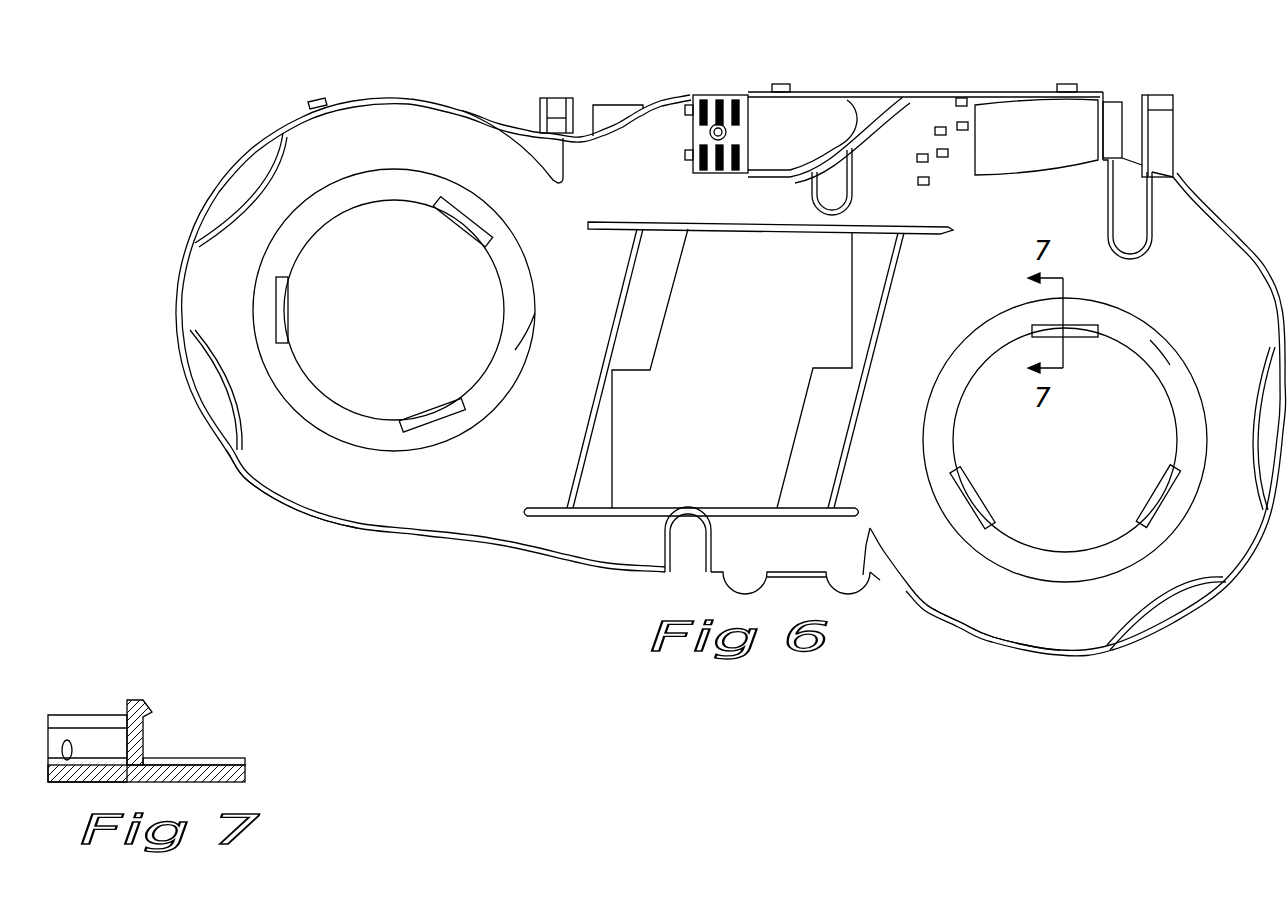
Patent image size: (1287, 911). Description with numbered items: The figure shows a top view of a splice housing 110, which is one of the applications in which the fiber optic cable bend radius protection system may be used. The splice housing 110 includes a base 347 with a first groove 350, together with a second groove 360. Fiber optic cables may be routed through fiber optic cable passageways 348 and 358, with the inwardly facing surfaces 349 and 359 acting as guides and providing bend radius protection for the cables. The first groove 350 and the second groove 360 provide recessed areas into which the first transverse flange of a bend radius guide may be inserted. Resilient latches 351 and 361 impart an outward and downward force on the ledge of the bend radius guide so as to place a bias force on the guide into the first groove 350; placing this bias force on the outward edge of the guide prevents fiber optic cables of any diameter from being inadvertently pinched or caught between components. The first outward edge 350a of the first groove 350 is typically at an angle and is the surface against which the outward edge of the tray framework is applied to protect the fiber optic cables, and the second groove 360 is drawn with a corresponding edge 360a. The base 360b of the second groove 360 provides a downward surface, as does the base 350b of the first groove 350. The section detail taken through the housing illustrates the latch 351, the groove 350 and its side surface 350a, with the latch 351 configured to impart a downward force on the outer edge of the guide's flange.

In FIG. 6, the splice housing 110 is at (655, 70).
In FIG. 6, the fiber optic cable passageway 358 is at (380, 118).
In FIG. 6, the second groove 360 is at (385, 186).
In FIG. 6, the inner surface of first boss 360a is at (510, 380).
In FIG. 6, the base of second groove 360b is at (515, 334).
In FIG. 6, the resilient latches 361 is at (460, 232).
In FIG. 6, the inwardly facing surface 359 is at (293, 488).
In FIG. 6, the base 347 is at (882, 453).
In FIG. 6, the first groove 350 is at (1003, 330).
In FIG. 7, the first groove 350 is at (190, 760).
In FIG. 6, the first outward edge of first groove 350a is at (1113, 528).
In FIG. 7, the first outward edge of first groove 350a is at (243, 777).
In FIG. 6, the base of first groove 350b is at (1250, 338).
In FIG. 6, the resilient latch 351 is at (970, 482).
In FIG. 7, the resilient latch 351 is at (137, 710).
In FIG. 6, the inwardly facing surface 349 is at (1020, 637).
In FIG. 6, the fiber optic cable passageway 348 is at (1098, 613).